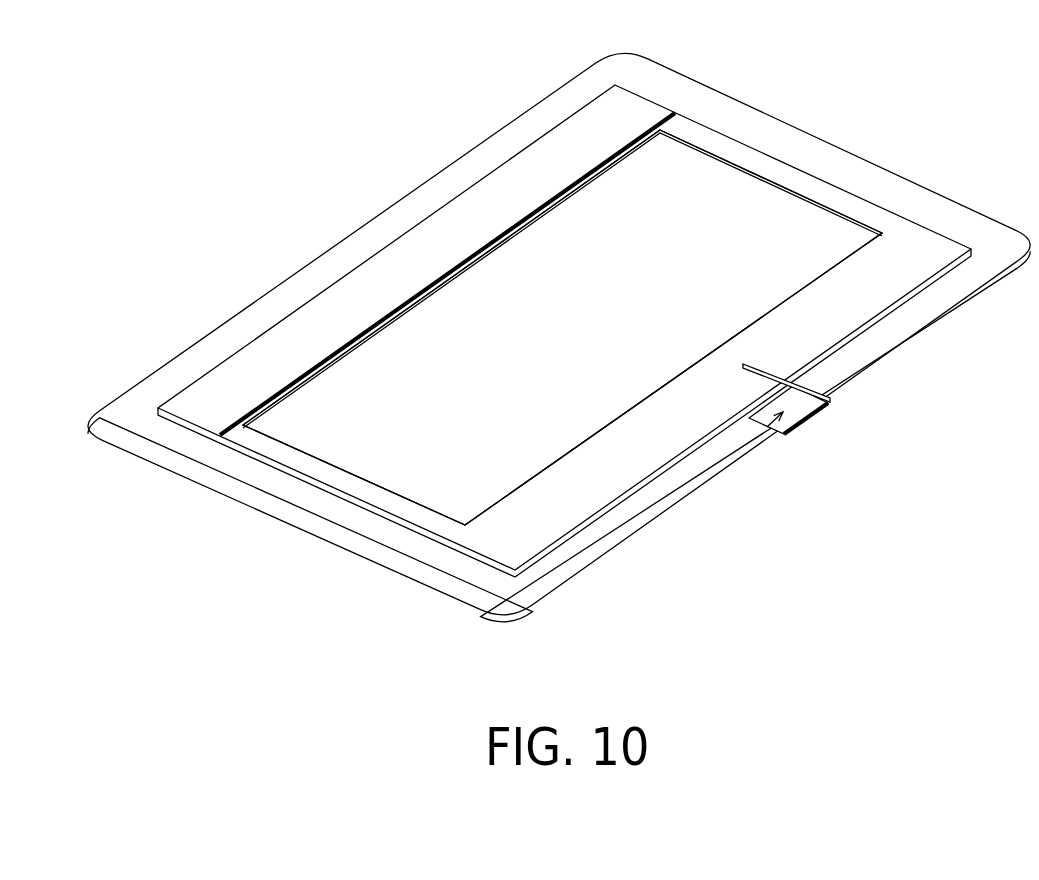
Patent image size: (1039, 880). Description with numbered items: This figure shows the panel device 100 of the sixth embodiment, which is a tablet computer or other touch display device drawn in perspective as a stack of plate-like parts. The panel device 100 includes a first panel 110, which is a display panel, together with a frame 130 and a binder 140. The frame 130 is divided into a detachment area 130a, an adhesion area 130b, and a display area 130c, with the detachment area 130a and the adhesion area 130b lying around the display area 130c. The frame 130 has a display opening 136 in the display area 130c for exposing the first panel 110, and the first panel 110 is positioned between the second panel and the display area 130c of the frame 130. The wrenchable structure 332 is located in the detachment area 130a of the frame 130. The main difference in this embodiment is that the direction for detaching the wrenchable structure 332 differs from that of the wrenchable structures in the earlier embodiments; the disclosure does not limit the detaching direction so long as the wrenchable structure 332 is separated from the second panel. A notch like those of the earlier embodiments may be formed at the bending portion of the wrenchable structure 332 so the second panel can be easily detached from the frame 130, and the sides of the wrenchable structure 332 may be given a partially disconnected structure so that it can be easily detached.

The panel device 100 is at (305, 199).
The first panel 110 is at (292, 395).
The frame 130 is at (457, 668).
The detachment area 130a is at (512, 590).
The adhesion area 130b is at (420, 561).
The display area 130c is at (371, 495).
The display opening 136 is at (332, 437).
The binder 140 is at (815, 419).
The wrenchable structure 332 is at (829, 403).